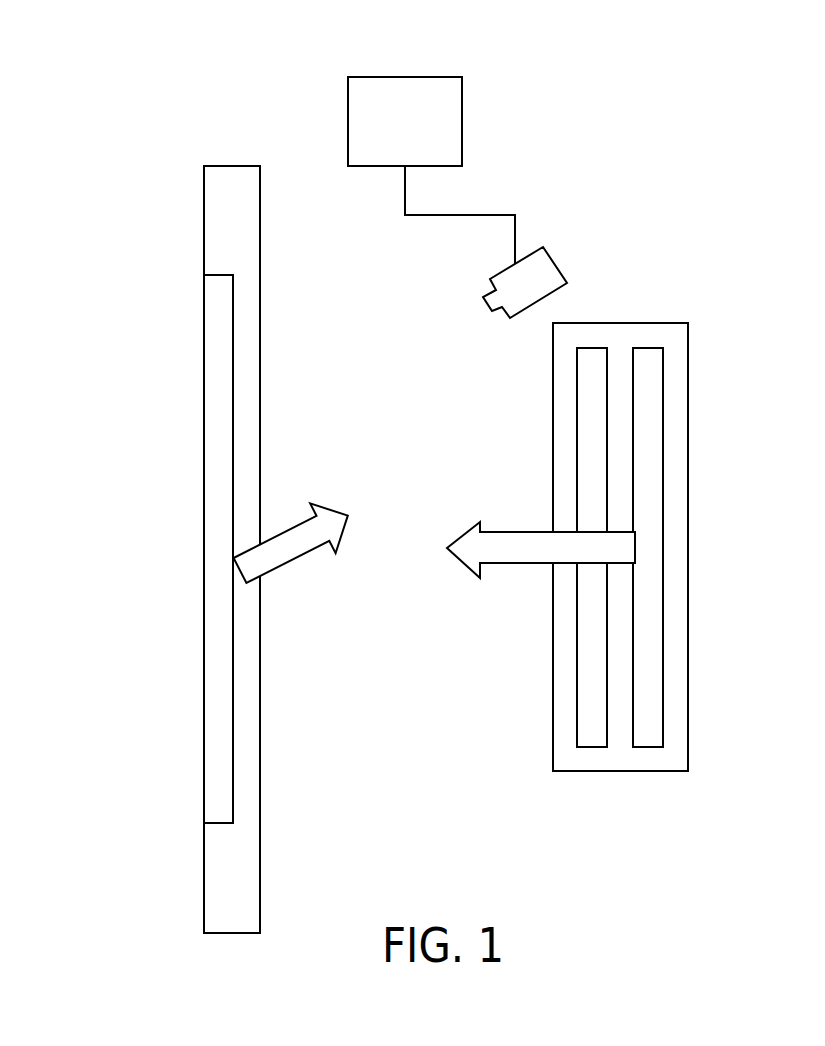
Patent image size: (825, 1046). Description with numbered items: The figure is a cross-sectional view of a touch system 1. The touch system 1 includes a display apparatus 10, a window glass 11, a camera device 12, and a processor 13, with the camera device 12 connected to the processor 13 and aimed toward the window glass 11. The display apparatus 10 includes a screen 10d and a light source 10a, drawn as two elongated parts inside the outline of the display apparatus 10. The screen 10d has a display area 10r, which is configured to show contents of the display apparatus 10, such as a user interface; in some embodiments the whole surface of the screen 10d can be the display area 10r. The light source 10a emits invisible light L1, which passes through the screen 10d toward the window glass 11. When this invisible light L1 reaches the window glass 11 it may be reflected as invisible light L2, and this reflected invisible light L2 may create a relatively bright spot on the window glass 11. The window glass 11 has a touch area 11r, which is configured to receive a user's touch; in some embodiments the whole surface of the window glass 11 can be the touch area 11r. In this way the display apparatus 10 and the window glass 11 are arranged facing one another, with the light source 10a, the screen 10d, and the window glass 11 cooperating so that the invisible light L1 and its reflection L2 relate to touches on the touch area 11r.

The touch system 1 is at (96, 65).
The display apparatus 10 is at (623, 516).
The light source 10a is at (650, 480).
The screen 10d is at (588, 643).
The display area 10r is at (577, 440).
The window glass 11 is at (198, 549).
The touch area 11r is at (217, 663).
The camera device 12 is at (546, 290).
The processor 13 is at (391, 138).
The invisible light L1 is at (519, 562).
The reflected invisible light L2 is at (283, 557).